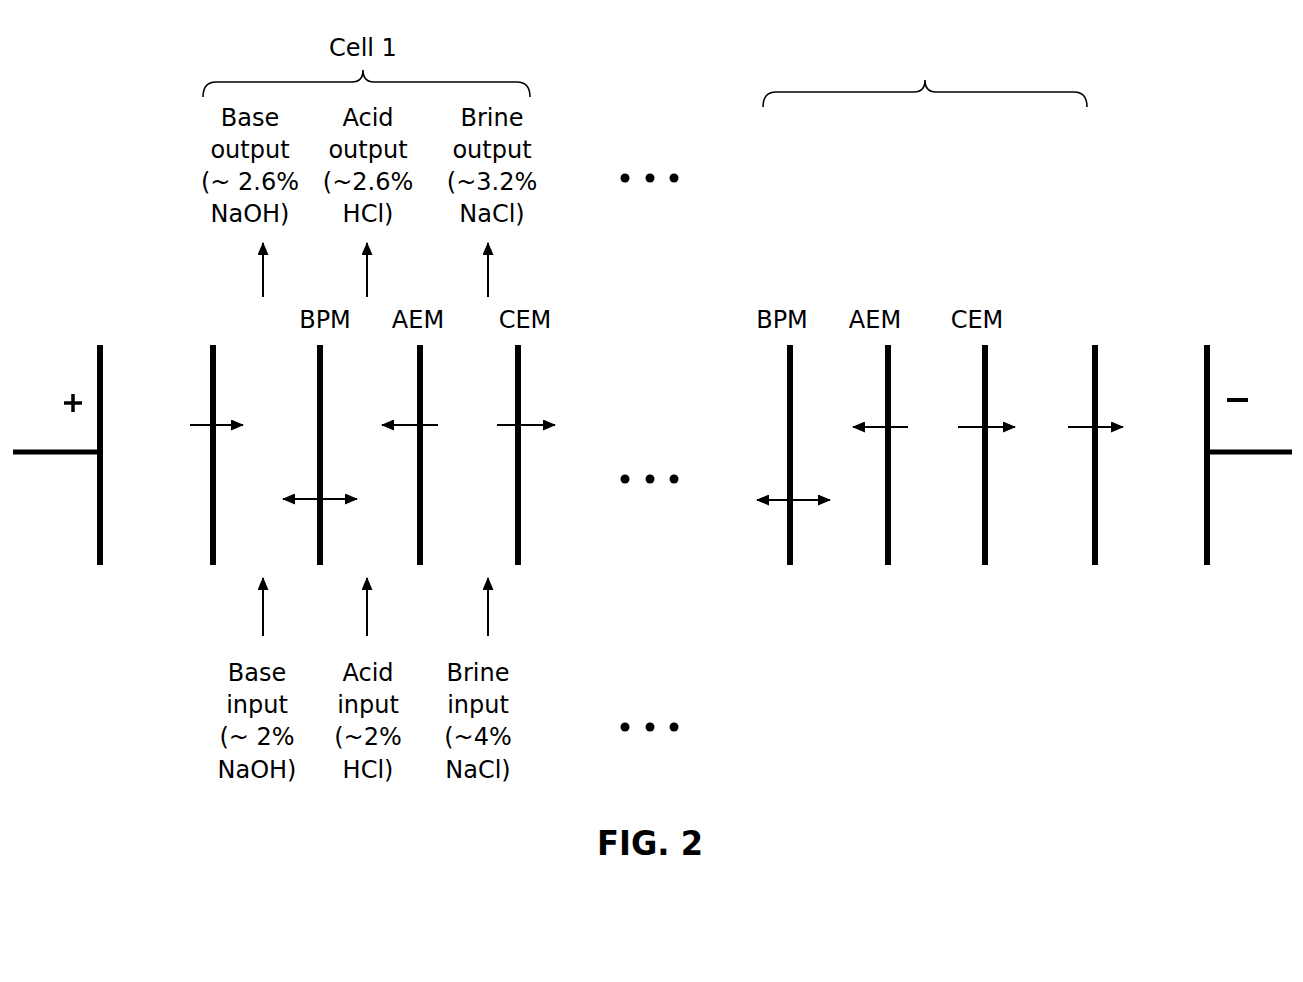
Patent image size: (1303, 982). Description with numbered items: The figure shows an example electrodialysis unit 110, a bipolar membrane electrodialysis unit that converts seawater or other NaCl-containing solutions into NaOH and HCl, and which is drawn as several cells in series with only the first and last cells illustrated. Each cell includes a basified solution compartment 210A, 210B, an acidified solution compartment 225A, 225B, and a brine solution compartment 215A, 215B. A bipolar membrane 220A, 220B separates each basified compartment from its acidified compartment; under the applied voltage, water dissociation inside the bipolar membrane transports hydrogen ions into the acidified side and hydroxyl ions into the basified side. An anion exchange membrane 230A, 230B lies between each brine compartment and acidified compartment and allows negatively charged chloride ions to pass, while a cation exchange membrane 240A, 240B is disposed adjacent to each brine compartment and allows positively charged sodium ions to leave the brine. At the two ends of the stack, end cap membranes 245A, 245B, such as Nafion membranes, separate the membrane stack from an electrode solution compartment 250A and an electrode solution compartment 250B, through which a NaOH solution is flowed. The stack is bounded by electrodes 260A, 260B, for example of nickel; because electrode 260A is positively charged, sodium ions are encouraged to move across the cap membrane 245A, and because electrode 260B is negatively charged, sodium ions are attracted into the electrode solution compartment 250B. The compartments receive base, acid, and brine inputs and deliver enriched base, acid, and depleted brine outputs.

The electrodialysis unit 110 is at (1092, 162).
The basified solution compartment 210A is at (278, 553).
The basified solution compartment 210B is at (762, 548).
The brine solution compartment 215A is at (497, 551).
The brine solution compartment 215B is at (938, 553).
The bipolar membrane 220A is at (323, 558).
The bipolar membrane 220B is at (795, 548).
The acidified solution compartment 225A is at (393, 551).
The acidified solution compartment 225B is at (862, 556).
The anion exchange membrane 230A is at (428, 383).
The anion exchange membrane 230B is at (895, 387).
The cation exchange membrane 240A is at (524, 383).
The cation exchange membrane 240B is at (992, 387).
The end cap membrane 245A is at (210, 566).
The end cap membrane 245B is at (1098, 548).
The electrode solution compartment 250A is at (150, 552).
The electrode solution compartment 250B is at (1185, 556).
The electrode 260A is at (97, 364).
The electrode 260B is at (1212, 388).